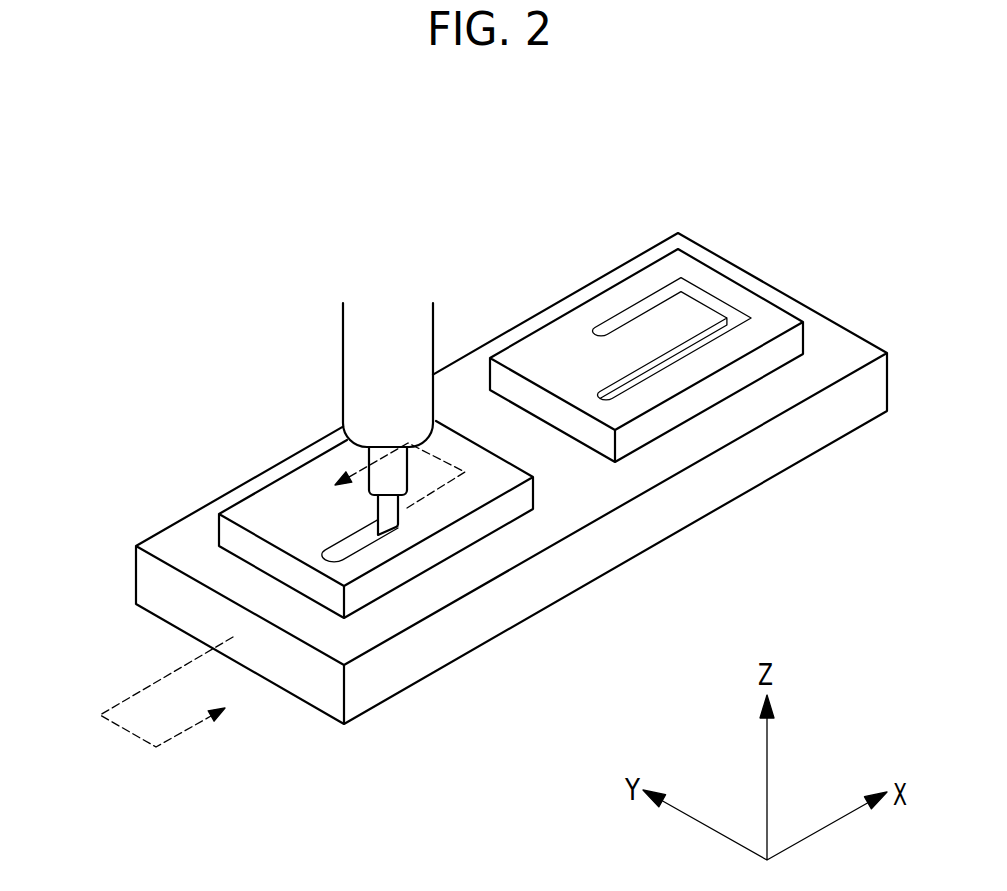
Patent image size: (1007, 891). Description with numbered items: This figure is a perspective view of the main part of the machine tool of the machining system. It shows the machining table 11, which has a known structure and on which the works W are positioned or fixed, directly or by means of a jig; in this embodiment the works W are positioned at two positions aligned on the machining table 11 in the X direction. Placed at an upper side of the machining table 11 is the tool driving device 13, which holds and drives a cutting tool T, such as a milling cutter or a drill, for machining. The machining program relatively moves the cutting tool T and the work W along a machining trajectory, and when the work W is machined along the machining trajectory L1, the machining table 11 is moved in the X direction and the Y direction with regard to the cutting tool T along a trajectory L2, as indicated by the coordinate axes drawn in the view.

The machining table 11 is at (833, 355).
The work W is at (290, 492).
The tool driving device 13 is at (343, 343).
The cutting tool T is at (378, 505).
The machining trajectory L1 is at (447, 457).
The trajectory L2 is at (127, 733).